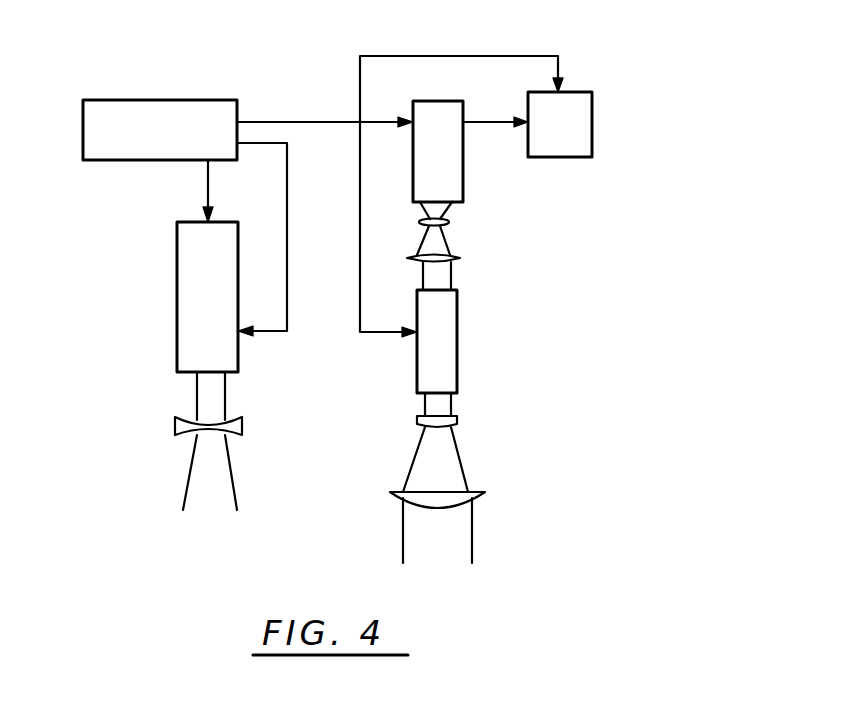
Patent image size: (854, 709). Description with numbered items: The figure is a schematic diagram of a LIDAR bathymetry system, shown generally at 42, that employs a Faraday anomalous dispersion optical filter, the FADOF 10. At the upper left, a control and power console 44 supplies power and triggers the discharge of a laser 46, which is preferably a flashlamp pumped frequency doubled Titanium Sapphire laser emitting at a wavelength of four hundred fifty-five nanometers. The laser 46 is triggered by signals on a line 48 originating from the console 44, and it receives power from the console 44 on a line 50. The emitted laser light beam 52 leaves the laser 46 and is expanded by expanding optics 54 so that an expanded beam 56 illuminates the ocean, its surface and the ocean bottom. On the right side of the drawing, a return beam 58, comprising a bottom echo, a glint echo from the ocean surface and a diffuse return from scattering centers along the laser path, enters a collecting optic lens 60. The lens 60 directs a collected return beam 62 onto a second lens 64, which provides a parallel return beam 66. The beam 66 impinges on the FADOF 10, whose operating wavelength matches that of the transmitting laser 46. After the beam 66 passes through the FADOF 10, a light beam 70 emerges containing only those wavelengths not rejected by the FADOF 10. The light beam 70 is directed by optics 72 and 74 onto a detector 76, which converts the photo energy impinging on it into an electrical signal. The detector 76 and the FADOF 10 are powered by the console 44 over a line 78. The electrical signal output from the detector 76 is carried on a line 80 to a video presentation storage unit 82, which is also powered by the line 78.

The LIDAR bathymetry system 42 is at (618, 53).
The control and power console 44 is at (163, 100).
The laser 46 is at (177, 284).
The line 48 is at (205, 184).
The line 50 is at (289, 216).
The emitted laser light beam 52 is at (226, 396).
The expanding optics 54 is at (185, 437).
The expanded beam 56 is at (228, 480).
The return beam 58 is at (462, 541).
The collecting optic lens 60 is at (475, 497).
The collected return beam 62 is at (462, 471).
The second lens 64 is at (457, 422).
The parallel return beam 66 is at (447, 408).
The FADOF 10 is at (460, 336).
The light beam 70 is at (443, 279).
The optics 72 is at (457, 259).
The optics 74 is at (448, 222).
The detector 76 is at (425, 100).
The line 78 is at (360, 176).
The line 80 is at (508, 120).
The video presentation storage unit 82 is at (592, 133).